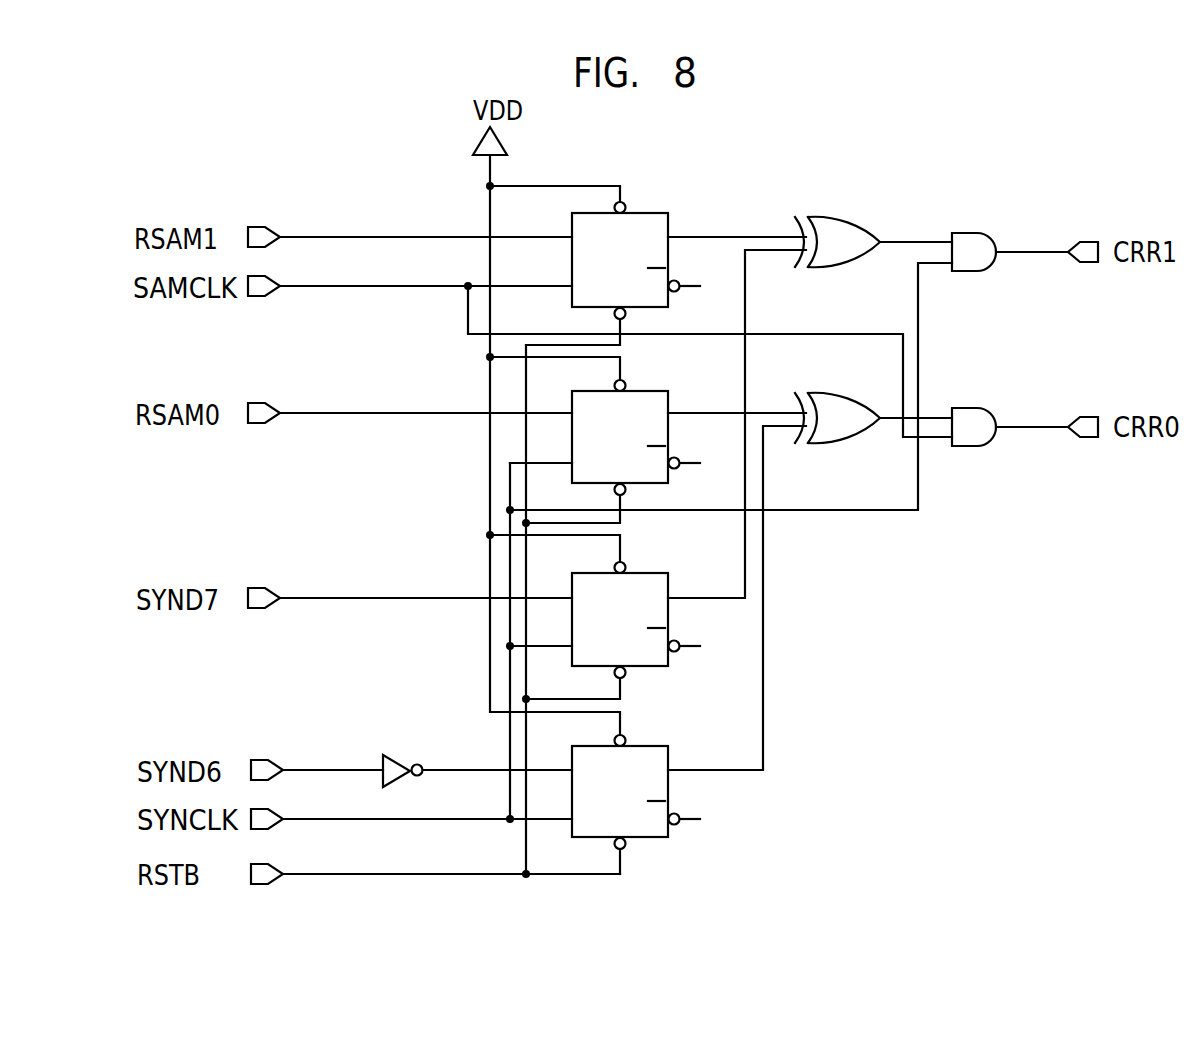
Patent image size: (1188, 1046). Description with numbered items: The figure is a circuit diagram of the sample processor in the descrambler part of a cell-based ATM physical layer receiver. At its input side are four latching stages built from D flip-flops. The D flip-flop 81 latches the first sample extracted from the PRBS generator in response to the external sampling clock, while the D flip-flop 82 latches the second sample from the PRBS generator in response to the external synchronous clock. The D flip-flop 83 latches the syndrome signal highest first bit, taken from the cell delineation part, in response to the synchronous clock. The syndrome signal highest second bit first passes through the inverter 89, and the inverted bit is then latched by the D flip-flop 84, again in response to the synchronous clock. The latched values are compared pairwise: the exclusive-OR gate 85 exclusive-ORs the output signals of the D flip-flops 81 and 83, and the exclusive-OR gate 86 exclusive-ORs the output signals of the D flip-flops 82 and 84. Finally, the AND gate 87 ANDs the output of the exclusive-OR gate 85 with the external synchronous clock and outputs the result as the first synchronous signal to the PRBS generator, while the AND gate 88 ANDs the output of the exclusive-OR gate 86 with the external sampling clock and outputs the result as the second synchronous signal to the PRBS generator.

The D flip-flop 81 is at (667, 213).
The D flip-flop 82 is at (667, 391).
The D flip-flop 83 is at (667, 573).
The D flip-flop 84 is at (667, 746).
The exclusive-OR gate 85 is at (837, 242).
The exclusive-OR gate 86 is at (837, 418).
The AND gate 87 is at (974, 252).
The AND gate 88 is at (974, 427).
The inverter 89 is at (408, 753).